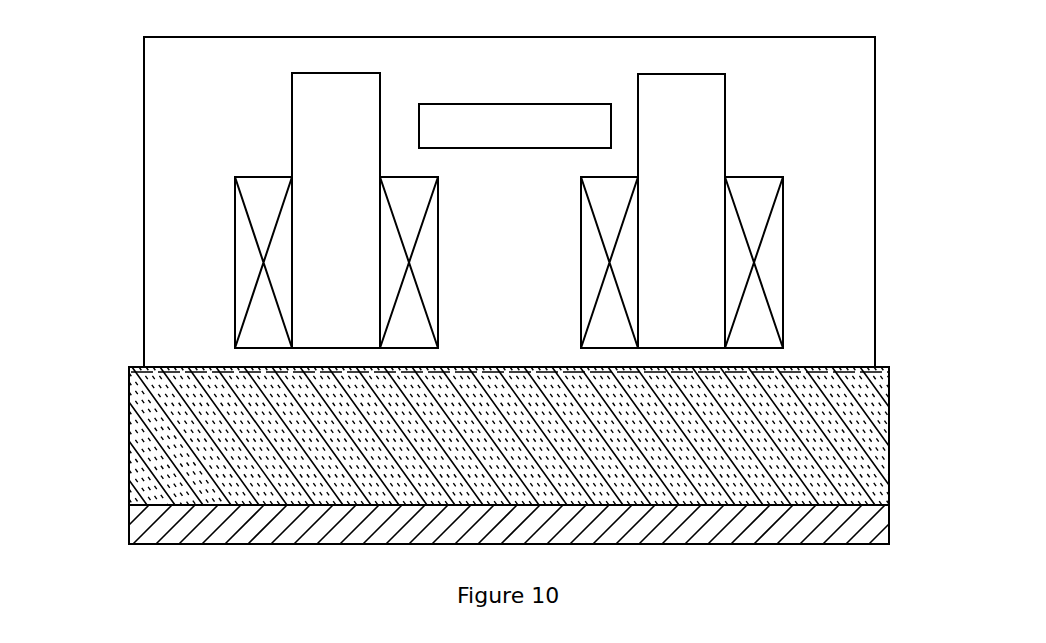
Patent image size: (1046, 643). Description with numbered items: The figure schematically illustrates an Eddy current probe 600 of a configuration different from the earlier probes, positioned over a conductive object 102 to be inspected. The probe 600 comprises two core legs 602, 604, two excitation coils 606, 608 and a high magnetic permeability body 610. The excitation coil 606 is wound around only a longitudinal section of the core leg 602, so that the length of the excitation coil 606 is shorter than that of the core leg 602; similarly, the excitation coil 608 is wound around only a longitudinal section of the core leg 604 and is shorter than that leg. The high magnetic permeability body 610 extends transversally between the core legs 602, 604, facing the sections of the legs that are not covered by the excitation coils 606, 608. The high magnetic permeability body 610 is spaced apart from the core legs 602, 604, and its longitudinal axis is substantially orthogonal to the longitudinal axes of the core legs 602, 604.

The Eddy current probe 600 is at (134, 70).
The core leg 602 is at (292, 117).
The core leg 604 is at (727, 111).
The excitation coil 606 is at (235, 212).
The excitation coil 608 is at (581, 207).
The high magnetic permeability body 610 is at (497, 104).
The conductive object 102 is at (889, 519).